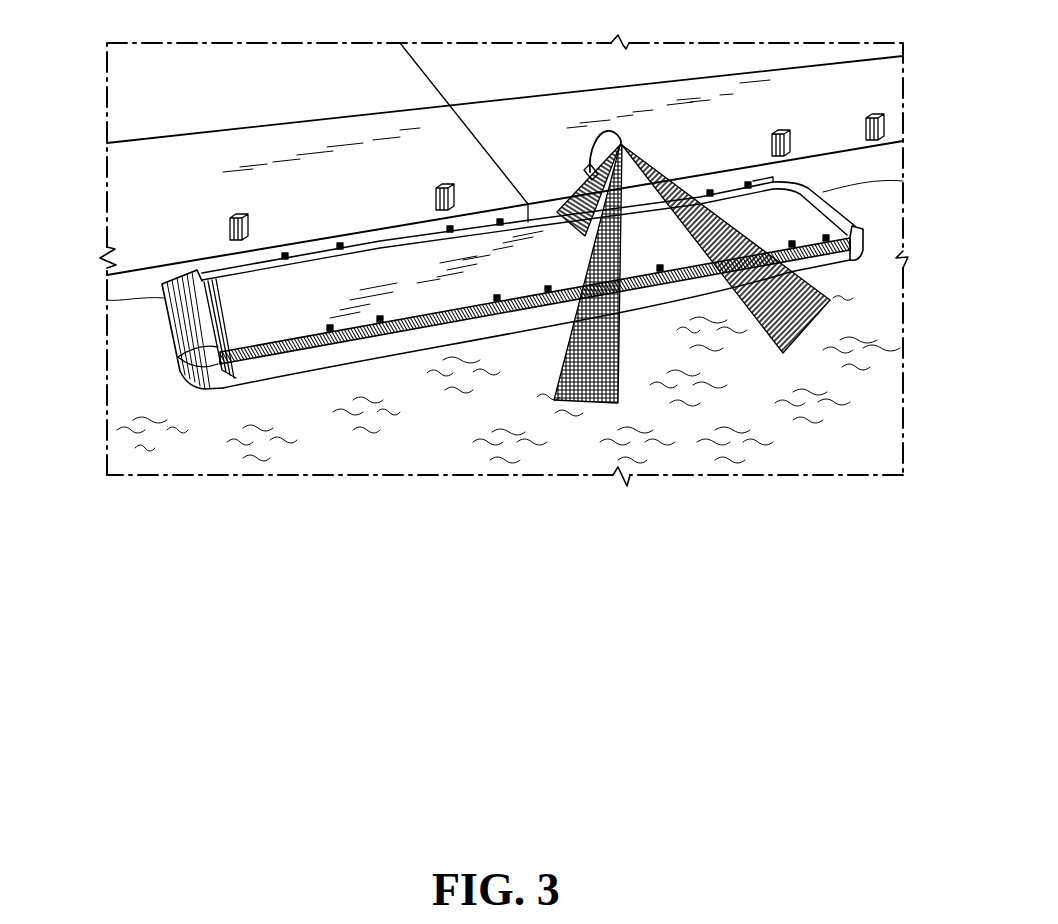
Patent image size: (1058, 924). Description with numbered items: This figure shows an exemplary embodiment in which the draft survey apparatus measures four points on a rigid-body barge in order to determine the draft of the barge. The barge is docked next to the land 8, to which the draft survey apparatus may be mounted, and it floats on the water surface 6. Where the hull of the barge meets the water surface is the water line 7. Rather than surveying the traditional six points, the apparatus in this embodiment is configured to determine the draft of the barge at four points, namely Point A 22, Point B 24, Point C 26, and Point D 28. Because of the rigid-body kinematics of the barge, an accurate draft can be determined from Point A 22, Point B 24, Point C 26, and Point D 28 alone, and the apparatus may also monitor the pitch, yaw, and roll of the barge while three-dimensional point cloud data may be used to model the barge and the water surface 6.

The water surface 6 is at (875, 413).
The water line 7 is at (551, 319).
The land 8 is at (140, 212).
The Point A 22 is at (170, 355).
The Point B 24 is at (208, 274).
The Point C 26 is at (782, 208).
The Point D 28 is at (863, 228).